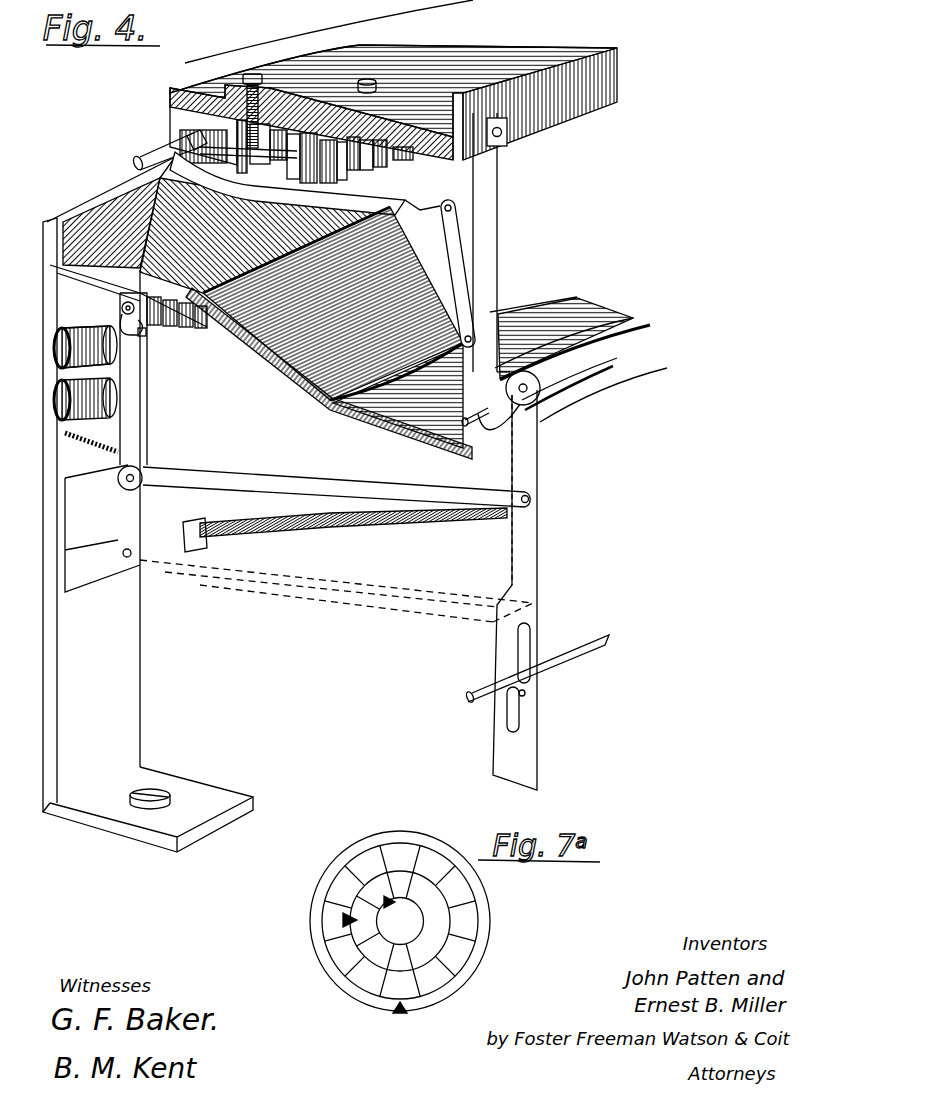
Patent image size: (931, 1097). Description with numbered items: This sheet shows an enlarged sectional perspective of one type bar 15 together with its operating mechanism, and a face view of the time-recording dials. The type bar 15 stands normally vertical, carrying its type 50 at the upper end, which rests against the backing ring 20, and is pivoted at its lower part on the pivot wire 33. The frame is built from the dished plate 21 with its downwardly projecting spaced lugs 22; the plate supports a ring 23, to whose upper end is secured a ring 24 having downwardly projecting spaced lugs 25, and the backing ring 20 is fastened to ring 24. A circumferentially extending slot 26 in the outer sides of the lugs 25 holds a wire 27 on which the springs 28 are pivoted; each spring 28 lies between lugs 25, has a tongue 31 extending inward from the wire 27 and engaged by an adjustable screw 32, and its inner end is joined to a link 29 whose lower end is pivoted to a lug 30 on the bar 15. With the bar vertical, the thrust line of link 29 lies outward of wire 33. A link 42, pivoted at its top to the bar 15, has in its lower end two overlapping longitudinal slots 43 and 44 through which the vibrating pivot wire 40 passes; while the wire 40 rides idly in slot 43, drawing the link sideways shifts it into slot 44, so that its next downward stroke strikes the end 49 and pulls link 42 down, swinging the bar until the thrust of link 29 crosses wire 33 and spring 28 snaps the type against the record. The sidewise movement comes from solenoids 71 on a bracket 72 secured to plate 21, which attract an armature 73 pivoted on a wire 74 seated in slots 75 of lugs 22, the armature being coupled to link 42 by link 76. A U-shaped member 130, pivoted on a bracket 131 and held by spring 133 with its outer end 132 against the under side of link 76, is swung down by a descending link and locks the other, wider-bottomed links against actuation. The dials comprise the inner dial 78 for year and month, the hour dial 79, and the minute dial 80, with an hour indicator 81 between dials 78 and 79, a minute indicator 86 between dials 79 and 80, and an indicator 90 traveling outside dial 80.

In FIG. 4, the type bar 15 is at (490, 237).
In FIG. 4, the backing ring 20 is at (587, 110).
In FIG. 4, the dished plate 21 is at (267, 363).
In FIG. 4, the spaced lugs 22 is at (190, 325).
In FIG. 4, the ring 23 is at (153, 207).
In FIG. 4, the ring 24 is at (170, 92).
In FIG. 4, the spaced lugs 25 is at (393, 163).
In FIG. 4, the circumferentially extending slot 26 is at (177, 140).
In FIG. 4, the wire 27 is at (173, 152).
In FIG. 4, the spring 28 is at (378, 200).
In FIG. 4, the link 29 is at (453, 258).
In FIG. 4, the lug 30 is at (458, 335).
In FIG. 4, the tongue 31 is at (237, 147).
In FIG. 4, the adjustable screw 32 is at (253, 74).
In FIG. 4, the pivot wire 33 is at (552, 383).
In FIG. 4, the pivot wire 40 is at (593, 650).
In FIG. 4, the link 42 is at (533, 583).
In FIG. 4, the slot 43 is at (510, 715).
In FIG. 4, the slot 44 is at (525, 640).
In FIG. 4, the end of slot 49 is at (523, 697).
In FIG. 4, the type 50 is at (503, 146).
In FIG. 4, the solenoid 71 is at (93, 403).
In FIG. 4, the bracket 72 is at (68, 308).
In FIG. 4, the armature 73 is at (140, 437).
In FIG. 4, the wire 74 is at (140, 332).
In FIG. 4, the slot 75 is at (117, 302).
In FIG. 4, the link 76 is at (270, 480).
In FIG. 7A, the dial 78 is at (402, 905).
In FIG. 7A, the dial 79 is at (445, 910).
In FIG. 7A, the dial 80 is at (477, 943).
In FIG. 7A, the indicator 81 is at (387, 900).
In FIG. 7A, the indicator 86 is at (347, 923).
In FIG. 7A, the indicator 90 is at (403, 1013).
In FIG. 4, the U-shaped member 130 is at (412, 523).
In FIG. 4, the bracket 131 is at (103, 547).
In FIG. 4, the outer end 132 is at (507, 510).
In FIG. 4, the spring 133 is at (188, 540).